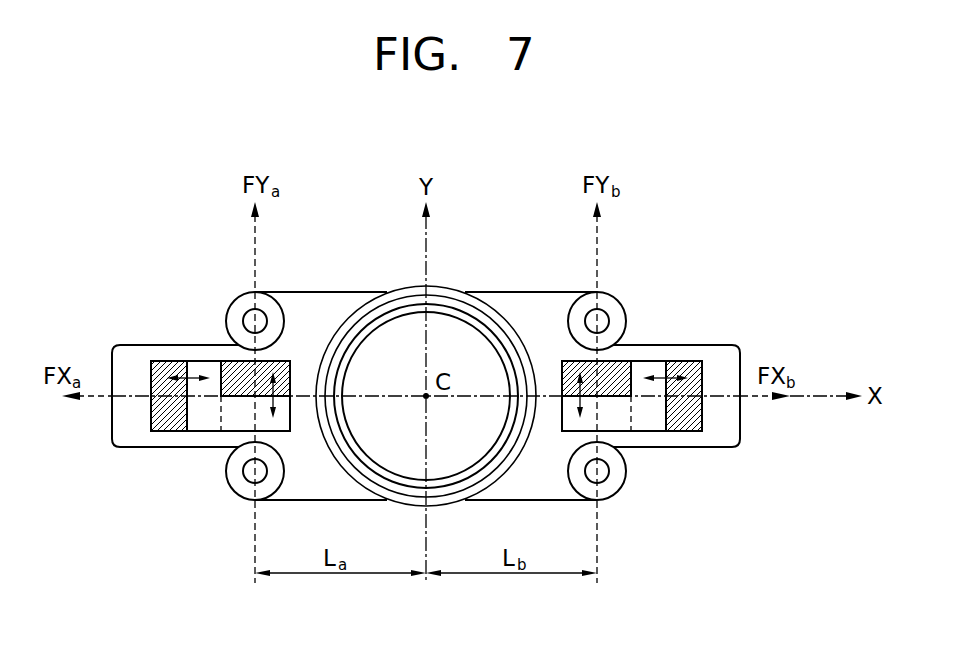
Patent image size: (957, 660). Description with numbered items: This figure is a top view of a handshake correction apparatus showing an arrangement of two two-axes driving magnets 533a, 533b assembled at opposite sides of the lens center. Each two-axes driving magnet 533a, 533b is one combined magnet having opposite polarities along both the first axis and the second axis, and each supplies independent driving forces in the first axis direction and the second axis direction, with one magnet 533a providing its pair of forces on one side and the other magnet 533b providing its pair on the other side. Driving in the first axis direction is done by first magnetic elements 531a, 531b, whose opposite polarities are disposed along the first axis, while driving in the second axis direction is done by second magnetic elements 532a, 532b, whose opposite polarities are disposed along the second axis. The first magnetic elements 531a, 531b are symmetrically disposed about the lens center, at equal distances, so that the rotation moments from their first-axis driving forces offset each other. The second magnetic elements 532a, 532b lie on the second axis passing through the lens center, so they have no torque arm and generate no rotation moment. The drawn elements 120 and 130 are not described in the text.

The lens module 120 is at (447, 342).
The carrier frame 130 is at (535, 310).
The first magnetic element 531a is at (232, 422).
The second magnetic element 532a is at (178, 428).
The two-axes driving magnet 533a is at (172, 537).
The first magnetic element 531b is at (618, 422).
The second magnetic element 532b is at (685, 422).
The two-axes driving magnet 533b is at (750, 537).